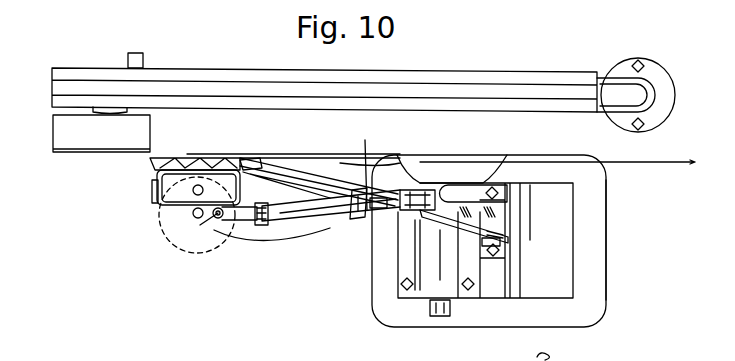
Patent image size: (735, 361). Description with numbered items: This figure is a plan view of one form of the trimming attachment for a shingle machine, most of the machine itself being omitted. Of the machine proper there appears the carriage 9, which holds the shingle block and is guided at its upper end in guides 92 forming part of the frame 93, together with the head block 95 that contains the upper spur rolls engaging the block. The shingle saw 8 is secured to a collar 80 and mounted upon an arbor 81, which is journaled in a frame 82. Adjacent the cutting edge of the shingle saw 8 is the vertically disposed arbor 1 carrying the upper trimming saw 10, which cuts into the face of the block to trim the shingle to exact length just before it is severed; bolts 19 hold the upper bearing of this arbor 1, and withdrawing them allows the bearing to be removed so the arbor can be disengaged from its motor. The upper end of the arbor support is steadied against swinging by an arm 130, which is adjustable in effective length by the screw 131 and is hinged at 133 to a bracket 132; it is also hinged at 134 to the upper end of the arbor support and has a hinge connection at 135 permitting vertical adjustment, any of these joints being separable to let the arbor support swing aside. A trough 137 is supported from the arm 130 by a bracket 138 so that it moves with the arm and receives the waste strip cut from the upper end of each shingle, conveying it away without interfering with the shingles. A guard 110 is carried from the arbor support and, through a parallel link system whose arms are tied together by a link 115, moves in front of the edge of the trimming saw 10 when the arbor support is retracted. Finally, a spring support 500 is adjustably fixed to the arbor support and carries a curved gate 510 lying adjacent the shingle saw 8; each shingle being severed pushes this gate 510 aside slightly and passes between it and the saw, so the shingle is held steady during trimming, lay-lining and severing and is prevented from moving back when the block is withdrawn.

The arbor 1 is at (167, 233).
The shingle saw 8 is at (653, 160).
The carriage 9 is at (143, 58).
The upper trimming saw 10 is at (203, 163).
The bolts 19 is at (198, 233).
The collar 80 is at (510, 165).
The arbor 81 is at (427, 310).
The frame 82 is at (560, 277).
The guides 92 is at (427, 88).
The frame 93 is at (633, 93).
The head block 95 is at (98, 137).
The guard 110 is at (155, 200).
The link 115 is at (550, 355).
The arm 130 is at (303, 208).
The screw 131 is at (388, 217).
The bracket 132 is at (540, 198).
The hinge 133 is at (508, 190).
The hinge 134 is at (226, 222).
The hinge connection 135 is at (263, 217).
The trough 137 is at (283, 172).
The bracket 138 is at (365, 167).
The spring support 500 is at (155, 173).
The curved gate 510 is at (235, 165).